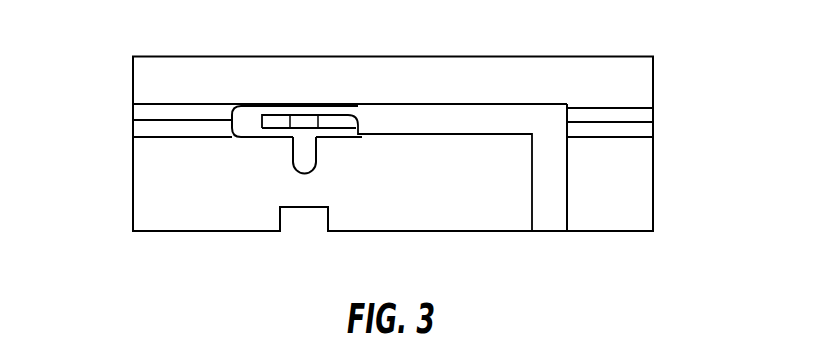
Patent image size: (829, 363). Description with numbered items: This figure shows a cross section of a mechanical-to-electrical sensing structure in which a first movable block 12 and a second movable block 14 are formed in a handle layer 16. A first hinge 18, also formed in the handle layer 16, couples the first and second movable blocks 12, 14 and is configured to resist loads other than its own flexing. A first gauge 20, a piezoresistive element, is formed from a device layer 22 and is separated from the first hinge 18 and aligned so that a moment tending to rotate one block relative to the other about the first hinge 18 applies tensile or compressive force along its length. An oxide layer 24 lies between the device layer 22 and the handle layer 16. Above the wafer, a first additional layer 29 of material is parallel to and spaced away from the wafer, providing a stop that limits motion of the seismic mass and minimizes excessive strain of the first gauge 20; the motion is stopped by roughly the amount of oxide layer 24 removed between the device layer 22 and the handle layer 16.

The first movable block 12 is at (213, 183).
The second movable block 14 is at (458, 182).
The handle layer 16 is at (645, 183).
The first hinge 18 is at (303, 174).
The first gauge 20 is at (305, 122).
The device layer 22 is at (140, 112).
The oxide layer 24 is at (138, 130).
The first additional layer 29 is at (140, 73).